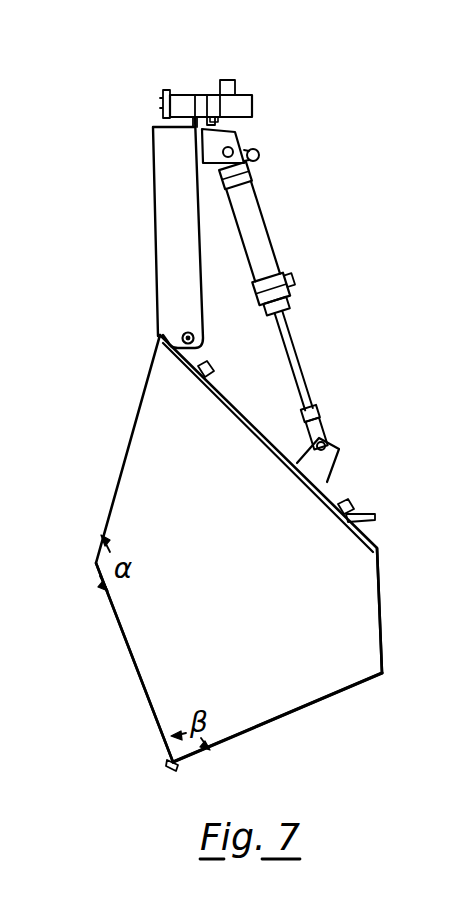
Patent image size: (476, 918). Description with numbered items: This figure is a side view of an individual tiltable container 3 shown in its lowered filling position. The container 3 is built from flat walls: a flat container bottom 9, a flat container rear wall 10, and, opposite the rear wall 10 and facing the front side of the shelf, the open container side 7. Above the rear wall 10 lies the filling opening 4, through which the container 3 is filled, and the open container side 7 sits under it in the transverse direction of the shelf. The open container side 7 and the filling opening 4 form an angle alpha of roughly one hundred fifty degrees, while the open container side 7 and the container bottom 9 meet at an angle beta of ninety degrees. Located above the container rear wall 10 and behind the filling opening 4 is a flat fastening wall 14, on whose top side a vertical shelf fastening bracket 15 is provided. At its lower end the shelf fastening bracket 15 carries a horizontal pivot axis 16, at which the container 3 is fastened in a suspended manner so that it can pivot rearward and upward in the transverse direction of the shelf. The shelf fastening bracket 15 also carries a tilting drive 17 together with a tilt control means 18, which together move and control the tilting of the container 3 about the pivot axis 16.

The tiltable container 3 is at (467, 266).
The filling opening 4 is at (125, 450).
The open container side 7 is at (134, 654).
The container bottom 9 is at (308, 707).
The container rear wall 10 is at (381, 608).
The fastening wall 14 is at (364, 530).
The shelf fastening bracket 15 is at (170, 245).
The pivot axis 16 is at (166, 330).
The tilting drive 17 is at (258, 235).
The tilt control means 18 is at (258, 104).